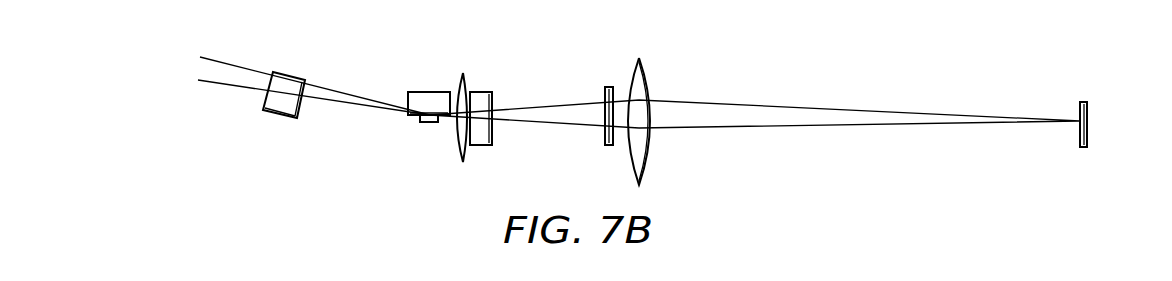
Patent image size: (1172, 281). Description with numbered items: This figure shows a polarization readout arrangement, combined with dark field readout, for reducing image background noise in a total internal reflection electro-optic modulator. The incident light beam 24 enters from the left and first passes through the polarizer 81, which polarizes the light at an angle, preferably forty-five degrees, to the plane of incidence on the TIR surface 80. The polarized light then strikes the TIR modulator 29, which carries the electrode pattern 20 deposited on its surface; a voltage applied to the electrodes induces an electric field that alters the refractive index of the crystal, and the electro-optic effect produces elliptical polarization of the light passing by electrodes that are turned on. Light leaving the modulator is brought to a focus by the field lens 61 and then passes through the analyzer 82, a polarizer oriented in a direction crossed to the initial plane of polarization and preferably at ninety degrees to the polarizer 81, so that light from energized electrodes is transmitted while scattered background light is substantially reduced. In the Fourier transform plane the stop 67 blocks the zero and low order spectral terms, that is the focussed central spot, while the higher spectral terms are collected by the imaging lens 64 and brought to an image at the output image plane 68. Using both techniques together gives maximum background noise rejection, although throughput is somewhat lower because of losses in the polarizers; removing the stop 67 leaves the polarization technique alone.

The incident light beam 24 is at (223, 80).
The polarizer 81 is at (305, 73).
The TIR surface 80 is at (408, 113).
The TIR modulator 29 is at (417, 92).
The electrode pattern 20 is at (437, 122).
The field lens 61 is at (470, 73).
The analyzer 82 is at (492, 92).
The stop 67 is at (605, 93).
The imaging lens 64 is at (653, 90).
The output image plane 68 is at (1080, 103).